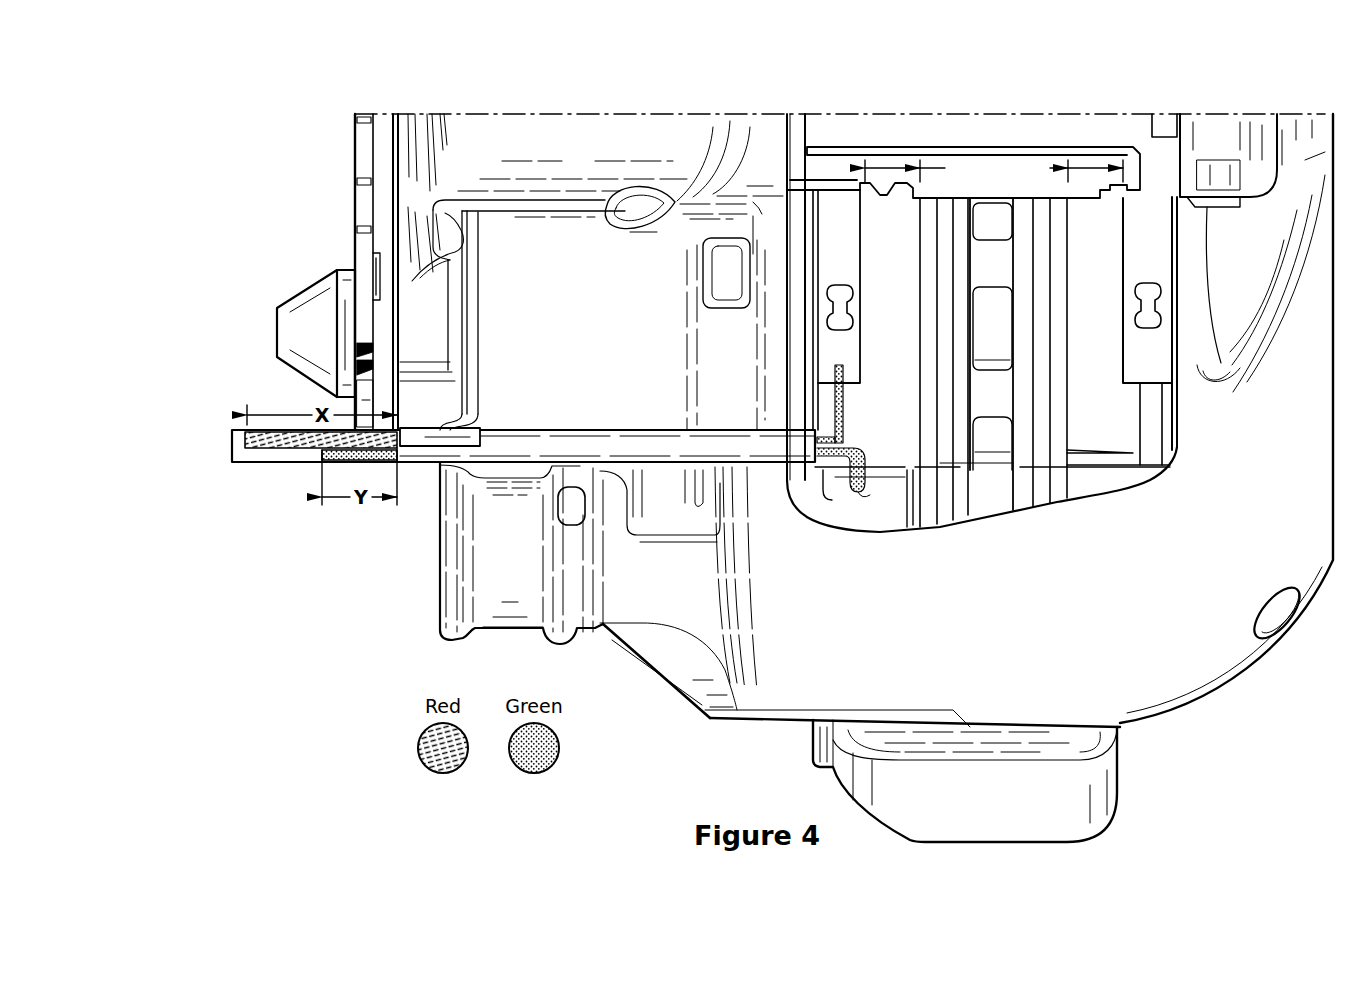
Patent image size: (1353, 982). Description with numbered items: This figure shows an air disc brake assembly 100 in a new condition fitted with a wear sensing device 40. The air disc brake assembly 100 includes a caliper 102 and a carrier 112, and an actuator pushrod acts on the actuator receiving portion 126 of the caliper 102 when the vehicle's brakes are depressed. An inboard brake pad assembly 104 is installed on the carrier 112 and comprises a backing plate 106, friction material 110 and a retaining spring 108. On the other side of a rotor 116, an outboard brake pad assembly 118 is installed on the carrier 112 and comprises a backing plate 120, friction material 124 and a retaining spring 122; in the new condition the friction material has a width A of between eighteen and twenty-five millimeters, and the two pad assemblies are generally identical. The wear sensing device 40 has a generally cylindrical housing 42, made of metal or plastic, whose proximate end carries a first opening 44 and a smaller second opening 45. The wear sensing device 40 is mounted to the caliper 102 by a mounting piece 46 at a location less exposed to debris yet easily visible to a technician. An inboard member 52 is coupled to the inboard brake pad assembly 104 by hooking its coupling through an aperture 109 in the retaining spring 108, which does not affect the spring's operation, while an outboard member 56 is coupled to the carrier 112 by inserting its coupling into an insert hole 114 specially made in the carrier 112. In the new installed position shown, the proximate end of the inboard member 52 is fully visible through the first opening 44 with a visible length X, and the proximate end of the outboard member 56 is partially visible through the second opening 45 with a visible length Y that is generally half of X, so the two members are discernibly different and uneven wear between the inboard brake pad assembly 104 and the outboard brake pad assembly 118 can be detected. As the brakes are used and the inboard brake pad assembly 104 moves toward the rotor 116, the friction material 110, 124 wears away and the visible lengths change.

The air disc brake assembly 100 is at (684, 100).
The caliper 102 is at (775, 128).
The inboard brake pad assembly 104 is at (897, 160).
The backing plate 106 is at (820, 207).
The retaining spring 108 is at (847, 188).
The aperture 109 is at (848, 365).
The friction material 110 is at (905, 198).
The carrier 112 is at (849, 515).
The insert hole 114 is at (870, 494).
The rotor 116 is at (993, 210).
The outboard brake pad assembly 118 is at (1118, 146).
The backing plate 120 is at (1190, 200).
The retaining spring 122 is at (1176, 200).
The friction material 124 is at (1090, 212).
The actuator receiving portion 126 is at (497, 104).
The wear sensing device 40 is at (488, 447).
The housing 42 is at (582, 430).
The first opening 44 is at (368, 424).
The second opening 45 is at (338, 458).
The mounting piece 46 is at (415, 447).
The inboard member 52 is at (265, 452).
The outboard member 56 is at (318, 452).